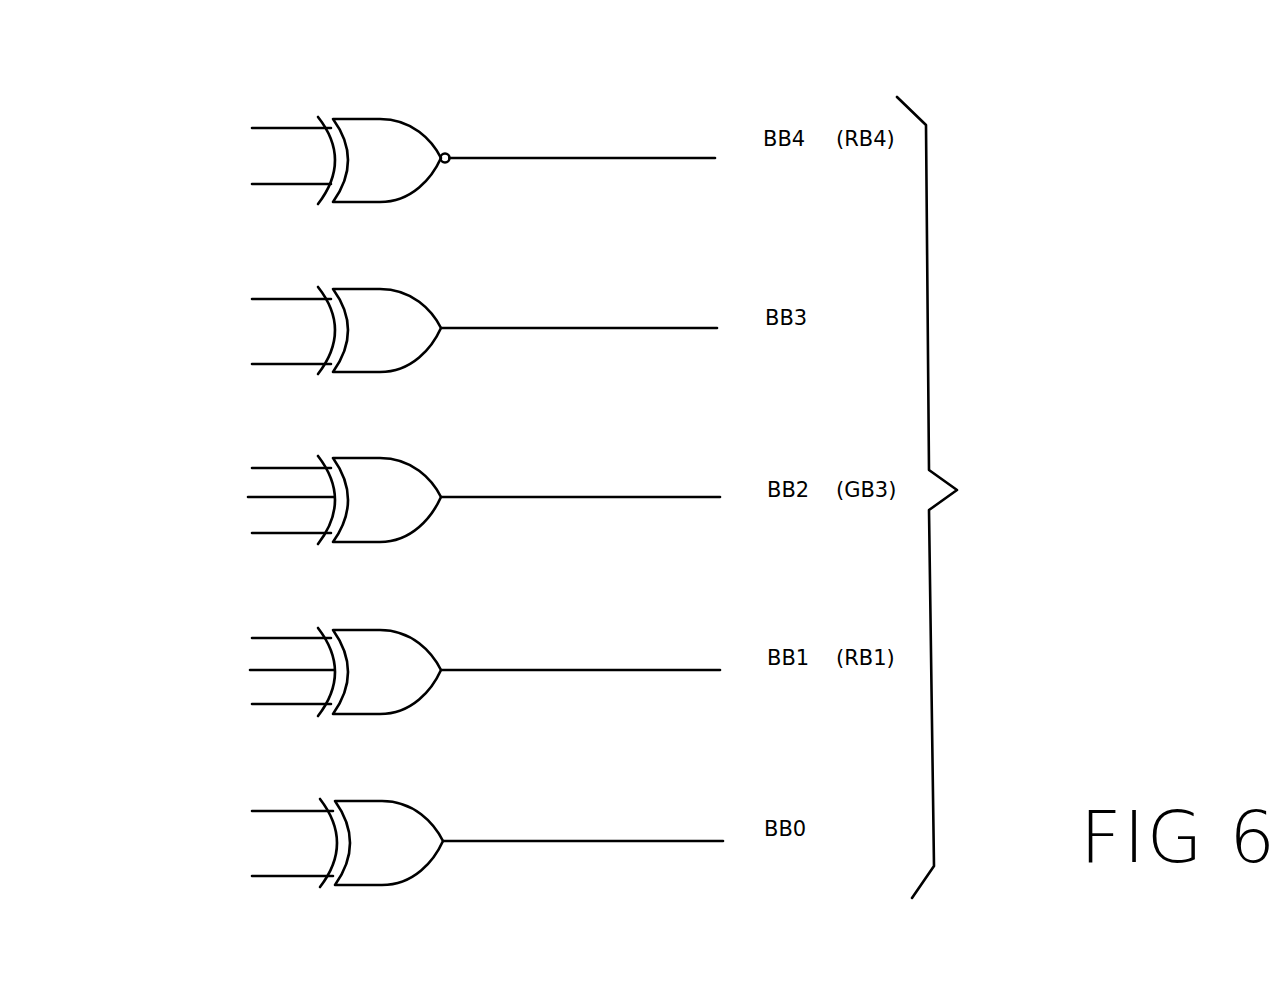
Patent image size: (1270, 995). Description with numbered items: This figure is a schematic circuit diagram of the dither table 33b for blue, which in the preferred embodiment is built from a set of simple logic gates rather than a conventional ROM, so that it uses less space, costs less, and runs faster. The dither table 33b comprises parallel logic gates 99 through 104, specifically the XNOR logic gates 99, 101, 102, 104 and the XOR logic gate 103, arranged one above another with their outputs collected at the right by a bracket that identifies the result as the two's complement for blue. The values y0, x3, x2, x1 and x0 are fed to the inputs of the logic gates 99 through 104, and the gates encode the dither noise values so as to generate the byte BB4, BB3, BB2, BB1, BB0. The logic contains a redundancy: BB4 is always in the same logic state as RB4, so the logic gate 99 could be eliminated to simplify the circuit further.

The XNOR logic gate 99 is at (421, 132).
The XNOR logic gate 101 is at (425, 305).
The XNOR logic gate 102 is at (425, 475).
The XOR logic gate 103 is at (420, 640).
The XNOR logic gate 104 is at (408, 806).
The dither table 33b is at (942, 83).